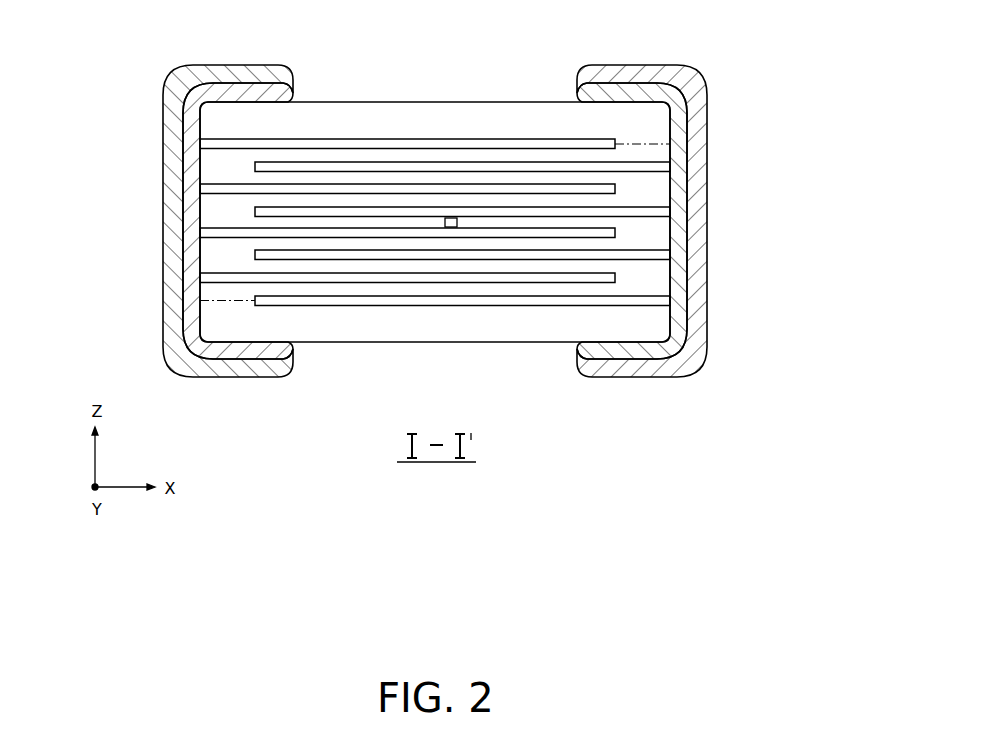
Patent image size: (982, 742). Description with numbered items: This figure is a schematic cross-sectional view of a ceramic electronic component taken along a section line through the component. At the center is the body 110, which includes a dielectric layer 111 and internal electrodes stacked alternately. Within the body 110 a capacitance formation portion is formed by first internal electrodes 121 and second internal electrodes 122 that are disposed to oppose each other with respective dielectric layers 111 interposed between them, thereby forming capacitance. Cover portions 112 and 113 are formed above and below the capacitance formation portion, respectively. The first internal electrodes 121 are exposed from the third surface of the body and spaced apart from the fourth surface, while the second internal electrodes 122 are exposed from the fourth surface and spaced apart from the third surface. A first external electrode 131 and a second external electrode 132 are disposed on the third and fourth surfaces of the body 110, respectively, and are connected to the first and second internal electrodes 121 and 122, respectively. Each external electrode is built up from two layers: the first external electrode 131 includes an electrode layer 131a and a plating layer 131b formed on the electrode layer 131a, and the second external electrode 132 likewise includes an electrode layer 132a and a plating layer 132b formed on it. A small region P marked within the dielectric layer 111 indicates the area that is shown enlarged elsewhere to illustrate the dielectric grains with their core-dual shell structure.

The body 110 is at (368, 101).
The dielectric layer 111 is at (320, 177).
The cover portion 112 is at (440, 118).
The cover portion 113 is at (442, 322).
The first internal electrode 121 is at (505, 145).
The second internal electrode 122 is at (563, 162).
The first external electrode 131 is at (155, 221).
The electrode layer 131a is at (192, 152).
The plating layer 131b is at (173, 177).
The second external electrode 132 is at (717, 221).
The electrode layer 132a is at (681, 128).
The plating layer 132b is at (695, 152).
The region P is at (457, 222).